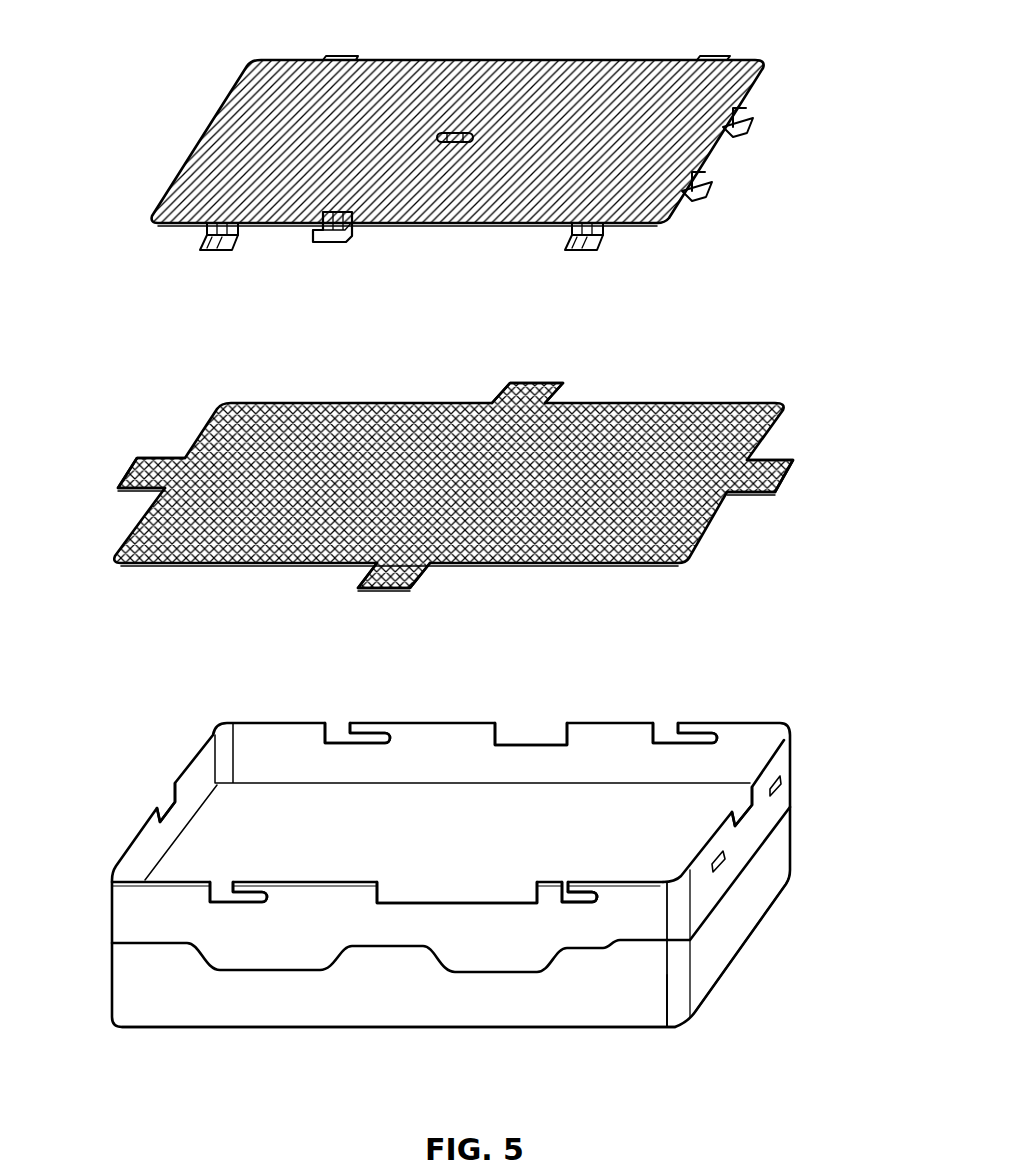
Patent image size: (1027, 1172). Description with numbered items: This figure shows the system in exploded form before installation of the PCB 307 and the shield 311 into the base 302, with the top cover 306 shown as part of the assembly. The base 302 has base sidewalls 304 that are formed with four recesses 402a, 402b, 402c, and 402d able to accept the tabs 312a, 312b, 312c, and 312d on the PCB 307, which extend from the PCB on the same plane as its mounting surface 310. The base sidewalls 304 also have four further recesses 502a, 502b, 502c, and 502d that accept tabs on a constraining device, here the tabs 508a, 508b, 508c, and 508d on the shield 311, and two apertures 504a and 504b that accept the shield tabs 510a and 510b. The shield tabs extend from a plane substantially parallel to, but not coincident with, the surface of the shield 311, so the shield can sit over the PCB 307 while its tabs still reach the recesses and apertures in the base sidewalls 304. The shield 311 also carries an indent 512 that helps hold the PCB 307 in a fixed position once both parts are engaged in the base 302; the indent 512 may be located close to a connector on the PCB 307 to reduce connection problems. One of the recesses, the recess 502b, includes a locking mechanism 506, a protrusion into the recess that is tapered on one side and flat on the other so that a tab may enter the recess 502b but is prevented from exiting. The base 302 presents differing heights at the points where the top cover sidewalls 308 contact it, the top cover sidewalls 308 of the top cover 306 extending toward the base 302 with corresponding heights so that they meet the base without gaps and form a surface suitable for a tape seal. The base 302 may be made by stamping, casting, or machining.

The shield 311 is at (523, 65).
The tab 508a is at (215, 252).
The tab 508b is at (582, 253).
The tab 508c is at (340, 57).
The tab 508d is at (715, 57).
The tab 510a is at (712, 196).
The tab 510b is at (757, 128).
The indent 512 is at (476, 130).
The PCB 307 is at (622, 408).
The mounting surface 310 is at (588, 568).
The tab 312a is at (420, 585).
The tab 312b is at (533, 383).
The tab 312c is at (132, 476).
The tab 312d is at (790, 478).
The base 302 is at (118, 947).
The base sidewalls 304 is at (700, 915).
The top cover 306 is at (138, 1028).
The top cover sidewalls 308 is at (700, 987).
The recess 402a is at (430, 888).
The recess 402b is at (524, 724).
The recess 402c is at (163, 800).
The recess 402d is at (750, 808).
The recess 502a is at (222, 888).
The recess 502b is at (553, 888).
The recess 502c is at (338, 724).
The recess 502d is at (667, 724).
The aperture 504a is at (726, 866).
The aperture 504b is at (785, 790).
The locking mechanism 506 is at (567, 897).